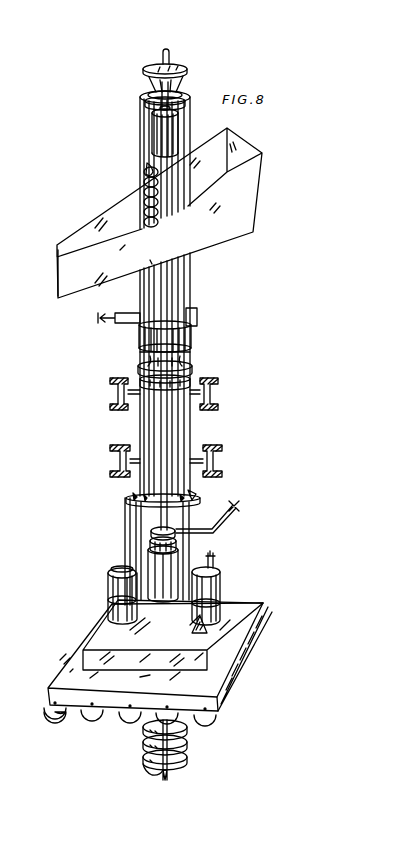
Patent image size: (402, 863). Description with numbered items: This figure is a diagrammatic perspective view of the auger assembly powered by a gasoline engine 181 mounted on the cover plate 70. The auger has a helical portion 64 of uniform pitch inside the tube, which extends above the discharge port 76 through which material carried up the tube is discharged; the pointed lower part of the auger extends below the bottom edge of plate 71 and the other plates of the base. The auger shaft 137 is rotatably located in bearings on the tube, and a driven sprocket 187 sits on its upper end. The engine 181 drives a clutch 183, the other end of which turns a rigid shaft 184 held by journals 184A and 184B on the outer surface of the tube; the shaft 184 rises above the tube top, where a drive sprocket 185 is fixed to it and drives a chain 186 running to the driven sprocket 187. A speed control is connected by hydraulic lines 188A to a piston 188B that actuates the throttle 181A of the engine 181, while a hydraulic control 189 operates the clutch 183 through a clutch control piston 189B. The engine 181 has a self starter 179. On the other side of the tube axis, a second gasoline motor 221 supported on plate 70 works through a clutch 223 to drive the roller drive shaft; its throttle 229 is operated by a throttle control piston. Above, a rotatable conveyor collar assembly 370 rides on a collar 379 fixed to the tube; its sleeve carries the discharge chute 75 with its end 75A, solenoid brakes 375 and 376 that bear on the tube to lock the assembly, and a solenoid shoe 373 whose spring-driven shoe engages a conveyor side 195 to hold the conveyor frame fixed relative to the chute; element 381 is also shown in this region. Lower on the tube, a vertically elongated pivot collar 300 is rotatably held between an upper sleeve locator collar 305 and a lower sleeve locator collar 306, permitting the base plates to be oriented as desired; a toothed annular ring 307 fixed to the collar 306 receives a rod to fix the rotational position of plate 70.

The shaft 137 is at (169, 53).
The driven sprocket 187 is at (174, 66).
The chain 186 is at (150, 80).
The drive sprocket 185 is at (146, 93).
The journal 184B is at (162, 147).
The discharge port 76 is at (145, 167).
The helical portion 64 is at (138, 207).
The discharge chute 75 is at (253, 197).
The wing plate end 75A is at (64, 262).
The rigid shaft 184 is at (167, 297).
The solenoid brake 375 is at (138, 317).
The solenoid brake 376 is at (198, 316).
The rotatable conveyor collar assembly 370 is at (193, 337).
The collar 379 is at (193, 349).
The journal 184A is at (193, 369).
The upper sleeve locator collar 305 is at (194, 378).
The pivot collar 300 is at (147, 442).
The side of conveyor 195 is at (45, 393).
The cable anchor 381 is at (11, 364).
The solenoid shoe 373 is at (54, 387).
The toothed annular ring 307 is at (135, 497).
The lower sleeve locator collar 306 is at (197, 497).
The hydraulic lines 188A is at (196, 500).
The hydraulic control 189 is at (152, 532).
The clutch control piston 189B is at (150, 545).
The clutch 183 is at (180, 557).
The piston 188B is at (117, 571).
The throttle 181A is at (112, 594).
The gasoline engine 181 is at (106, 604).
The throttle 229 is at (213, 590).
The gasoline motor 221 is at (222, 604).
The clutch 223 is at (212, 627).
The plate 70 is at (62, 684).
The plate 71 is at (236, 663).
The self starter 179 is at (52, 699).